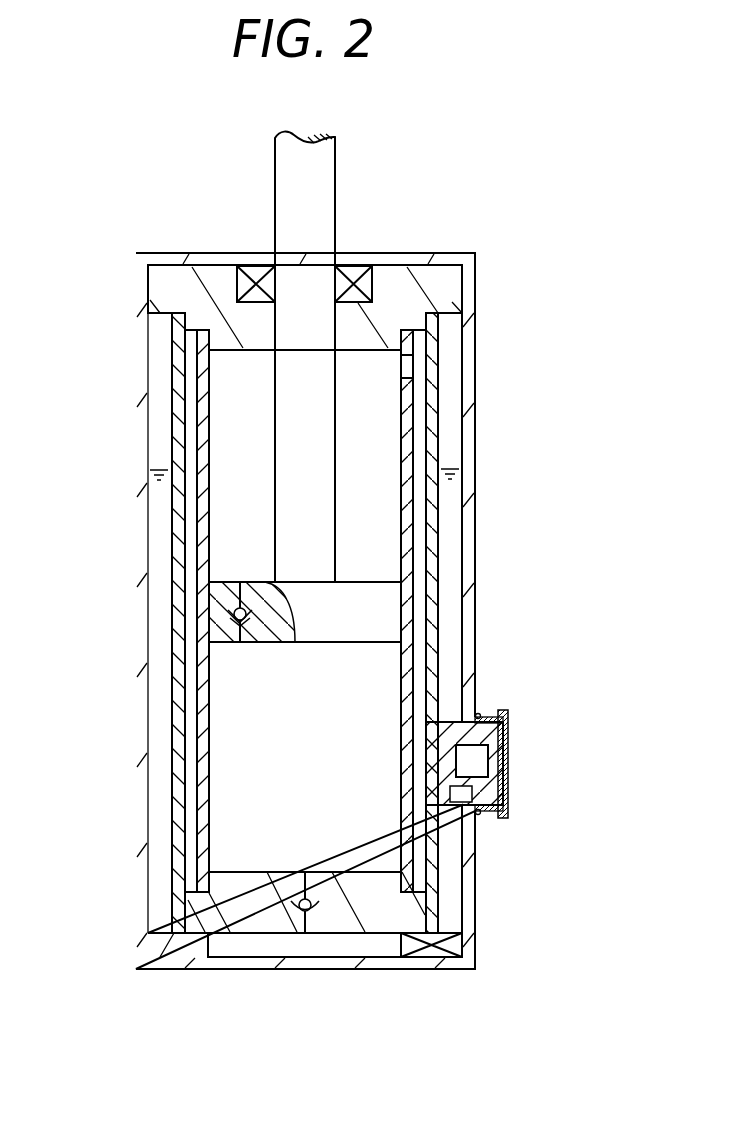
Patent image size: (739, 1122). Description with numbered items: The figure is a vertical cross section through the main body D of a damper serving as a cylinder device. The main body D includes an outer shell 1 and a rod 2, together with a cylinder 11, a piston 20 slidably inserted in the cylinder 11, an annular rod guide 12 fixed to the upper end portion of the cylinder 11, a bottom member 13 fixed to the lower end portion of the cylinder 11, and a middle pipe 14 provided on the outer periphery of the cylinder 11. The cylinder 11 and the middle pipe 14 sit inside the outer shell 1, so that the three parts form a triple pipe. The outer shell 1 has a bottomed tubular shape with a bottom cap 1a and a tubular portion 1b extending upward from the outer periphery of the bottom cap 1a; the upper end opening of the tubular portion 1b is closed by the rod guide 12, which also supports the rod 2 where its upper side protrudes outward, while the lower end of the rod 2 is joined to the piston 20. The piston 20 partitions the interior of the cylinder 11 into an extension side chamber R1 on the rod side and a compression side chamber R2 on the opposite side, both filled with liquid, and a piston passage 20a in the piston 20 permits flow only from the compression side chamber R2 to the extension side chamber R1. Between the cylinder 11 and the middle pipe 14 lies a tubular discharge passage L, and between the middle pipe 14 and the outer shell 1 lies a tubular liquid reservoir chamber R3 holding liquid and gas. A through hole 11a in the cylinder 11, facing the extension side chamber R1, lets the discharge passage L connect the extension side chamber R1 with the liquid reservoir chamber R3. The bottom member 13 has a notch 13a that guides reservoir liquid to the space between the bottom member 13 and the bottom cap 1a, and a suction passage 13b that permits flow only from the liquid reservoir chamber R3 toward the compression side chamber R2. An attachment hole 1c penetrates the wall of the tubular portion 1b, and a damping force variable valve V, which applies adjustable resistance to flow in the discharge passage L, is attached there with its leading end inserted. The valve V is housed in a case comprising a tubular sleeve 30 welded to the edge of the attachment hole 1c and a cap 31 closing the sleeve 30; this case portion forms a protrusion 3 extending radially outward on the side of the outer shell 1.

The main body D is at (467, 220).
The outer shell 1 is at (126, 429).
The bottom cap 1a is at (318, 970).
The tubular portion 1b is at (470, 561).
The attachment hole 1c is at (493, 723).
The rod 2 is at (275, 183).
The protrusion 3 is at (520, 742).
The cylinder 11 is at (200, 521).
The through hole 11a is at (408, 364).
The rod guide 12 is at (210, 273).
The bottom member 13 is at (247, 928).
The notch 13a is at (432, 952).
The suction passage 13b is at (297, 890).
The middle pipe 14 is at (178, 760).
The piston 20 is at (348, 632).
The piston passage 20a is at (254, 630).
The sleeve 30 is at (480, 820).
The cap 31 is at (507, 772).
The damping force variable valve V is at (513, 800).
The discharge passage L is at (420, 518).
The extension side chamber R1 is at (252, 462).
The compression side chamber R2 is at (319, 772).
The liquid reservoir chamber R3 is at (157, 653).